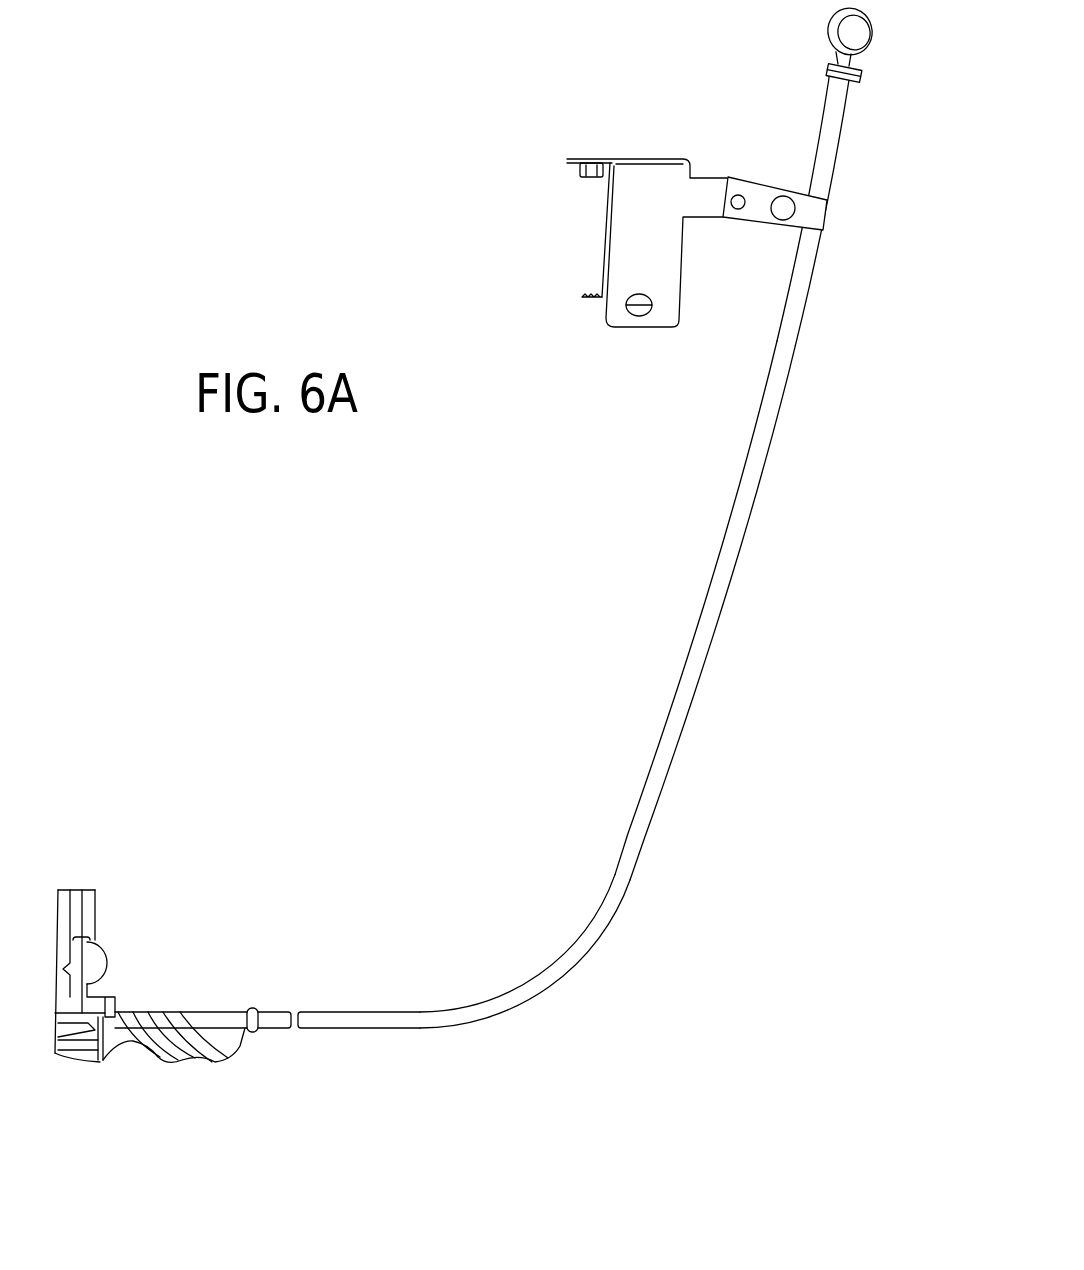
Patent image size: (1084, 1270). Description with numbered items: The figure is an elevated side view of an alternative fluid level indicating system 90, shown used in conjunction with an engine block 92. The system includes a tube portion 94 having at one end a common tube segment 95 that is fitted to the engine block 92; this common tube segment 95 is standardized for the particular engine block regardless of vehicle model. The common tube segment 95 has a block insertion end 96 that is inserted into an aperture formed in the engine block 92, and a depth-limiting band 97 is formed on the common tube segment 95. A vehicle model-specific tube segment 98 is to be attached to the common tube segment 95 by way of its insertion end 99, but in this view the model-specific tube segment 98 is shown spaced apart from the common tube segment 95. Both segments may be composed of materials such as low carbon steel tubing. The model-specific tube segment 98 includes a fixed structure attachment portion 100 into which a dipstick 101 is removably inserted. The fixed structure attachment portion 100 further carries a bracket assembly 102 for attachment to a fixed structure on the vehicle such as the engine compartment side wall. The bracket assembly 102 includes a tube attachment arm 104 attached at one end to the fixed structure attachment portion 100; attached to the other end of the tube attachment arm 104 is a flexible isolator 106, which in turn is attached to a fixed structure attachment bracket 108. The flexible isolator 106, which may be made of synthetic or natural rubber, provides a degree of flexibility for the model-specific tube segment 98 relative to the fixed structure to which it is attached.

The fluid level indicating system 90 is at (546, 735).
The engine block 92 is at (85, 1040).
The tube portion 94 is at (597, 927).
The common tube segment 95 is at (328, 1003).
The block insertion end 96 is at (137, 1007).
The depth-limiting band 97 is at (253, 1030).
The model-specific tube segment 98 is at (677, 722).
The insertion end 99 is at (318, 1018).
The fixed structure attachment portion 100 is at (827, 168).
The dipstick 101 is at (870, 55).
The bracket assembly 102 is at (638, 248).
The tube attachment arm 104 is at (820, 220).
The flexible isolator 106 is at (765, 207).
The fixed structure attachment bracket 108 is at (662, 180).